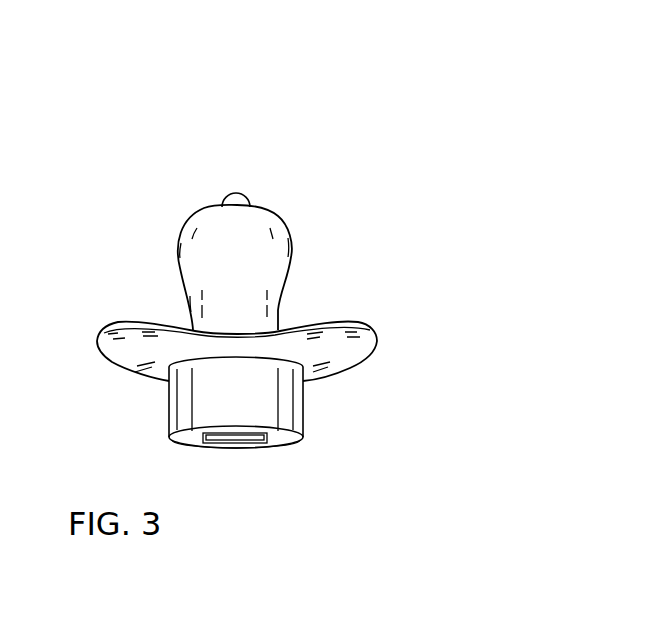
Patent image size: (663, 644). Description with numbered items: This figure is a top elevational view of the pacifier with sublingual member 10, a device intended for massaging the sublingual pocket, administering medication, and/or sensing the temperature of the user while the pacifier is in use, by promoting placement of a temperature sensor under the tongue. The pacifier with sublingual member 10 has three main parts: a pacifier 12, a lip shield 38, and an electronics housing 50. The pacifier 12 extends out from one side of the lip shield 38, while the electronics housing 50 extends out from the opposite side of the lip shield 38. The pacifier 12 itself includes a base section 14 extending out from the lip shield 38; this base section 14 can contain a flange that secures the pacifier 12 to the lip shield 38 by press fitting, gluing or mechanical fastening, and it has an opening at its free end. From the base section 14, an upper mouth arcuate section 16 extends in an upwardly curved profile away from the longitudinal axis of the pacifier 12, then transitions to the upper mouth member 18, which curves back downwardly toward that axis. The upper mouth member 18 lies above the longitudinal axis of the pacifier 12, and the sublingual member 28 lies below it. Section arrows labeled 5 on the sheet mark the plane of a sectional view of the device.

The section line 5 is at (234, 146).
The pacifier with sublingual member 10 is at (150, 180).
The pacifier 12 is at (292, 234).
The base section 14 is at (232, 312).
The upper mouth arcuate section 16 is at (235, 275).
The upper mouth member 18 is at (231, 233).
The sublingual member 28 is at (235, 191).
The lip shield 38 is at (96, 343).
The electronics housing 50 is at (168, 419).